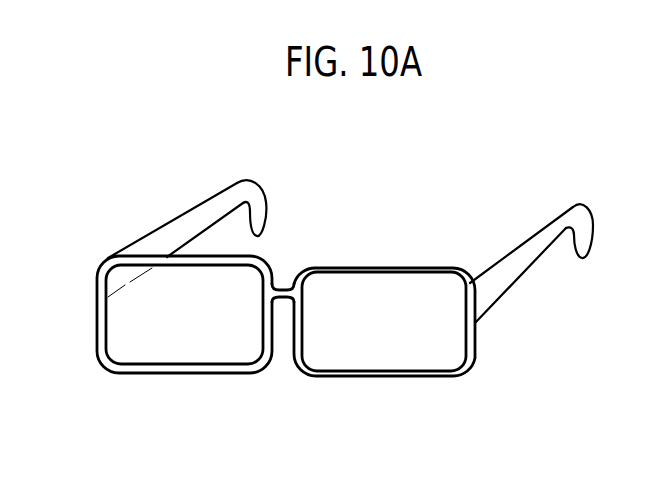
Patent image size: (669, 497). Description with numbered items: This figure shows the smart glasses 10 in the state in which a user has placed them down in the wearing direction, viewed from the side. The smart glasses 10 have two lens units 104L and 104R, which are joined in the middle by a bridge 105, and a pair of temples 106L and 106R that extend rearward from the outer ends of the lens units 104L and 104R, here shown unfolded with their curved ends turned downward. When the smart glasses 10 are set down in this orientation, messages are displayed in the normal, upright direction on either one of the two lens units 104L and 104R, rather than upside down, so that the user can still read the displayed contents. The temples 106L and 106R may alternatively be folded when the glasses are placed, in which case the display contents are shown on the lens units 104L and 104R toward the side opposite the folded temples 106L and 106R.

The smart glasses 10 is at (456, 145).
The lens unit 104R is at (175, 365).
The lens unit 104L is at (378, 372).
The bridge 105 is at (287, 290).
The temple 106R is at (178, 217).
The temple 106L is at (520, 278).